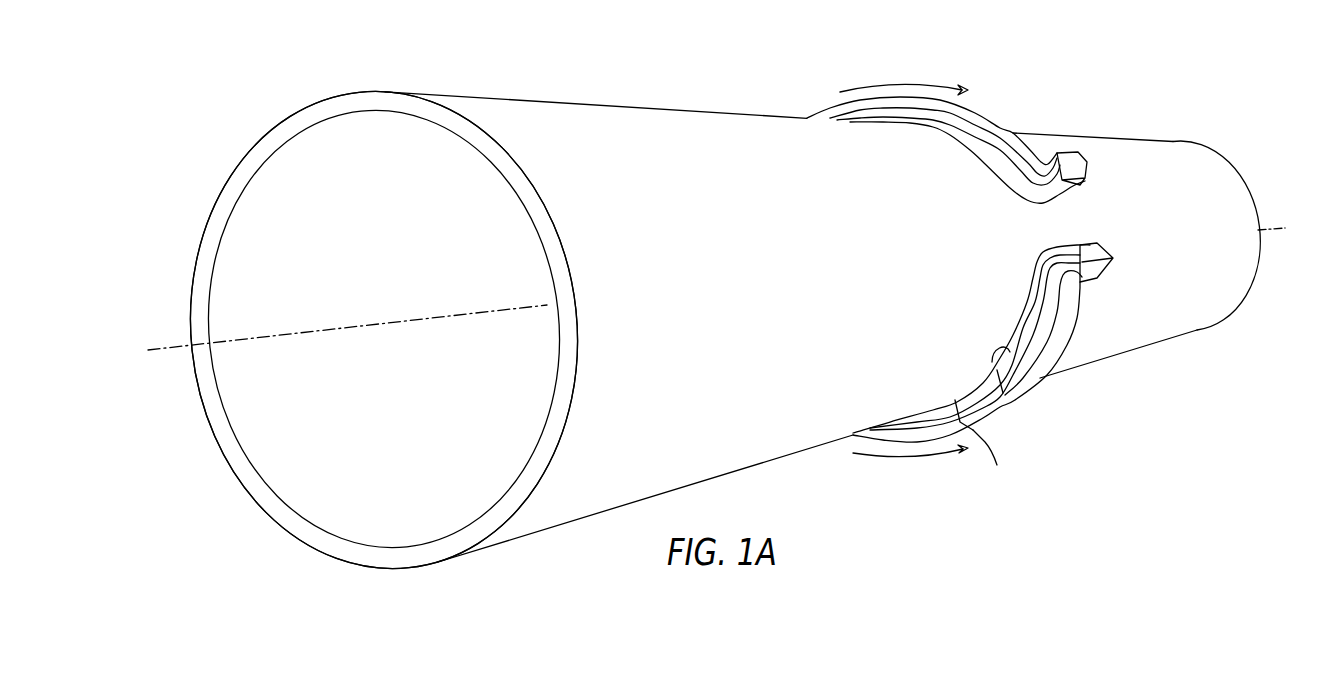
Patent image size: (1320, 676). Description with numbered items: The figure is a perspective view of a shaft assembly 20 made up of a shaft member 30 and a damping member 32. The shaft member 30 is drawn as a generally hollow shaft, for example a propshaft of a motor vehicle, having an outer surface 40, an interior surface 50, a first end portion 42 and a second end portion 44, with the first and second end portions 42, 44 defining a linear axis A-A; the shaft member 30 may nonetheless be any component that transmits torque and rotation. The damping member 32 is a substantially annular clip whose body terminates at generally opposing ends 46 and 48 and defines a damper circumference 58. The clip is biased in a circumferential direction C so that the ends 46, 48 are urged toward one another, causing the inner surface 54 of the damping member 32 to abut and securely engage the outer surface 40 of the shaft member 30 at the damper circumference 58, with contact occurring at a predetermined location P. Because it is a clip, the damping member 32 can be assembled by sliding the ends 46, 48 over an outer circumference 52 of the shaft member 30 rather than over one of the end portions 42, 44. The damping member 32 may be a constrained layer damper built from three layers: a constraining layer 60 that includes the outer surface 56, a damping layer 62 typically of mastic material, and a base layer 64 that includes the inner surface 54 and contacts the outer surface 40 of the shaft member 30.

The shaft assembly 20 is at (1084, 70).
The shaft member 30 is at (1168, 339).
The damping member 32 is at (962, 118).
The outer surface 40 is at (605, 105).
The first end portion 42 is at (465, 98).
The second end portion 44 is at (1172, 156).
The end 46 is at (1075, 194).
The end 48 is at (1097, 241).
The interior surface 50 is at (305, 160).
The outer circumference 52 is at (528, 167).
The inner surface 54 is at (1020, 378).
The outer surface 56 is at (1030, 385).
The damper circumference 58 is at (975, 158).
The constraining layer 60 is at (1037, 337).
The damping layer 62 is at (1024, 316).
The base layer 64 is at (1033, 294).